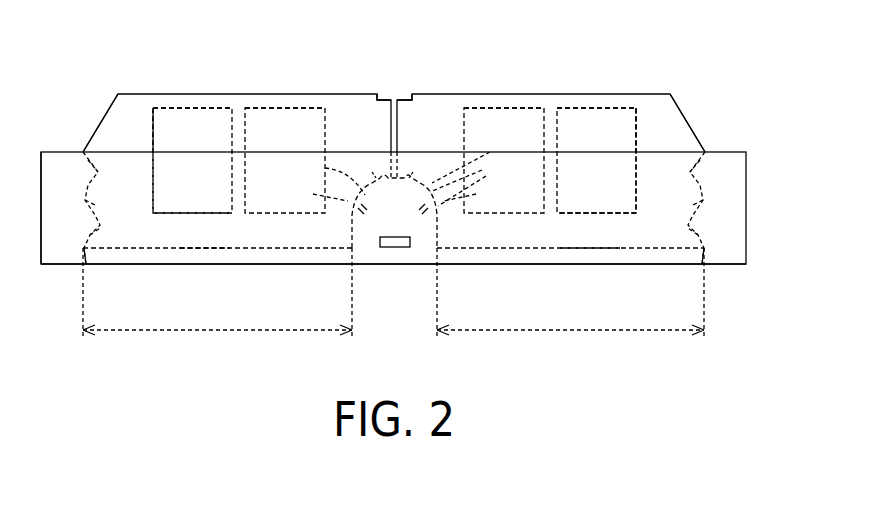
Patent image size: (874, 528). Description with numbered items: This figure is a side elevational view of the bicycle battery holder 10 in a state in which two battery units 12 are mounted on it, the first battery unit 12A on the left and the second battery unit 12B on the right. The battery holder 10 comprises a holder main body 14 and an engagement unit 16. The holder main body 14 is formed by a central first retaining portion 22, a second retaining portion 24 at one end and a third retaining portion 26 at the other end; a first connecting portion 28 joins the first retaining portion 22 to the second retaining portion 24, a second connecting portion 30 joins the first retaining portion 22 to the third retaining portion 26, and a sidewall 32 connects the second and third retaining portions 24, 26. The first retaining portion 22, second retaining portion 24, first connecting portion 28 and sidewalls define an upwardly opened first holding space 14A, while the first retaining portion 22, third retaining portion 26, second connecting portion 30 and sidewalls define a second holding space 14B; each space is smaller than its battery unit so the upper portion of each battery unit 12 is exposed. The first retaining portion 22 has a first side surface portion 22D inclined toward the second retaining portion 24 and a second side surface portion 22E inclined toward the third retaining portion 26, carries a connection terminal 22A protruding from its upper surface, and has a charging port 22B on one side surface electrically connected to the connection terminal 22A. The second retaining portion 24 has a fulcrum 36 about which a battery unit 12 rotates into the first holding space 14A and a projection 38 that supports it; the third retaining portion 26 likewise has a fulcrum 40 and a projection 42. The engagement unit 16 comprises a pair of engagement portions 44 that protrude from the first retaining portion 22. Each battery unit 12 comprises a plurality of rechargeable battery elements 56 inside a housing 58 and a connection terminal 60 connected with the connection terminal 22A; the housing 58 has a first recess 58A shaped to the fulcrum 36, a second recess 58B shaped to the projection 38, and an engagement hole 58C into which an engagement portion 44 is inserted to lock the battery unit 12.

The battery holder 10 is at (757, 118).
The battery unit 12 is at (345, 34).
The first battery unit 12A is at (378, 94).
The second battery unit 12B is at (410, 94).
The holder main body 14 is at (299, 265).
The first holding space 14A is at (83, 152).
The second holding space 14B is at (705, 152).
The engagement unit 16 is at (430, 222).
The first retaining portion 22 is at (469, 178).
The connection terminal 22A is at (372, 172).
The charging port 22B is at (393, 249).
The first side surface portion 22D is at (243, 179).
The second side surface portion 22E is at (548, 175).
The second retaining portion 24 is at (98, 197).
The third retaining portion 26 is at (690, 197).
The first connecting portion 28 is at (205, 241).
The second connecting portion 30 is at (613, 241).
The sidewall 32 is at (41, 212).
The fulcrum 36 is at (102, 168).
The projection 38 is at (93, 265).
The fulcrum 40 is at (686, 168).
The projection 42 is at (692, 265).
The engagement portion 44 is at (352, 226).
The battery element 56 is at (264, 103).
The housing 58 is at (306, 97).
The first recess 58A is at (96, 160).
The second recess 58B is at (104, 231).
The engagement hole 58C is at (395, 191).
The connection terminal 60 is at (325, 165).